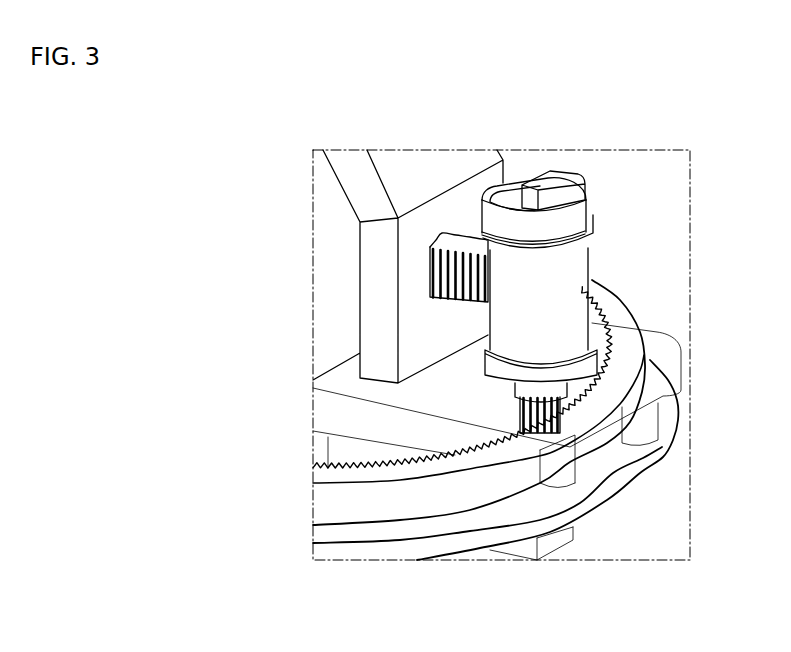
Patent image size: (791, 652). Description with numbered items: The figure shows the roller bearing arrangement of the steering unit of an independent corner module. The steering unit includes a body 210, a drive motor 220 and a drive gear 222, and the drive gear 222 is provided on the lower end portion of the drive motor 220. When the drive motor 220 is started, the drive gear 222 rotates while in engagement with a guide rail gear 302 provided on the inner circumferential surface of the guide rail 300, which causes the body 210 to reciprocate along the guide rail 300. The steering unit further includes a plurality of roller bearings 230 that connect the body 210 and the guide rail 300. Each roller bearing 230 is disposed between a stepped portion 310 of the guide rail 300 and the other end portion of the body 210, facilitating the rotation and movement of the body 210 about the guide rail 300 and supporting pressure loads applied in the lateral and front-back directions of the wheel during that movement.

The body 210 is at (370, 268).
The drive motor 220 is at (575, 268).
The drive gear 222 is at (520, 397).
The roller bearing 230 is at (625, 465).
The guide rail 300 is at (482, 492).
The guide rail gear 302 is at (453, 273).
The stepped portion 310 is at (600, 470).